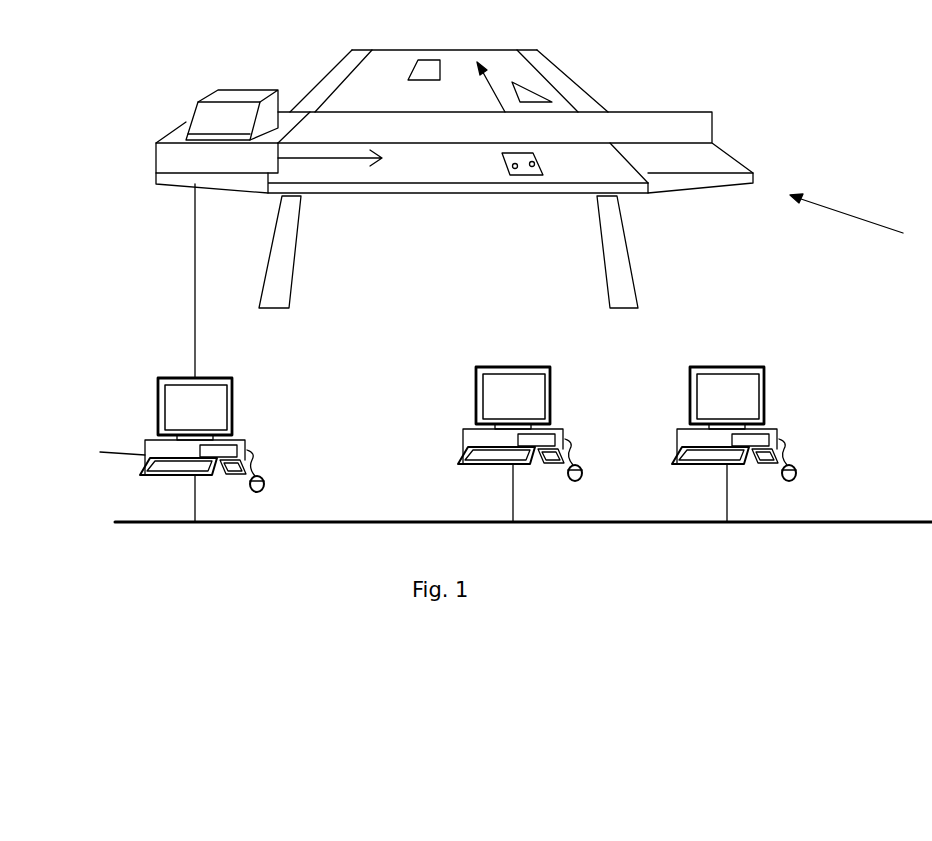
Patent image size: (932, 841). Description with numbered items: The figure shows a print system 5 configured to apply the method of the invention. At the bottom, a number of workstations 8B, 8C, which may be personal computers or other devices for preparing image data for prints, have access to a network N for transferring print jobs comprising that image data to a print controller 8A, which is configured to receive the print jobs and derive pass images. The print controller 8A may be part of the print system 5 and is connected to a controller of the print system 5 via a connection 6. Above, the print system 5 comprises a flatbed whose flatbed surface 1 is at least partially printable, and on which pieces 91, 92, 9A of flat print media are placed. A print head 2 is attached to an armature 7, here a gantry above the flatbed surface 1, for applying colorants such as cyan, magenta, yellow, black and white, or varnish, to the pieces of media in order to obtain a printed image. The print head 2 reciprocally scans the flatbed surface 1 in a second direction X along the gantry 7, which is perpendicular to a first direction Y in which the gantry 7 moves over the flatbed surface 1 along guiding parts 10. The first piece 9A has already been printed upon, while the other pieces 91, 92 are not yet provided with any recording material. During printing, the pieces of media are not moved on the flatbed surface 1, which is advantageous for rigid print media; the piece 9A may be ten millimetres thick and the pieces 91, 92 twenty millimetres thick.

The flatbed surface 1 is at (383, 90).
The print head 2 is at (212, 94).
The print system 5 is at (854, 223).
The connection 6 is at (196, 320).
The armature 7 is at (663, 122).
The print controller 8A is at (243, 445).
The workstation 8B is at (561, 434).
The workstation 8C is at (775, 434).
The first piece of media 9A is at (527, 175).
The guiding parts 10 is at (305, 100).
The piece of media 91 is at (520, 97).
The piece of media 92 is at (430, 70).
The second direction X is at (325, 160).
The first direction Y is at (487, 92).
The network N is at (908, 521).